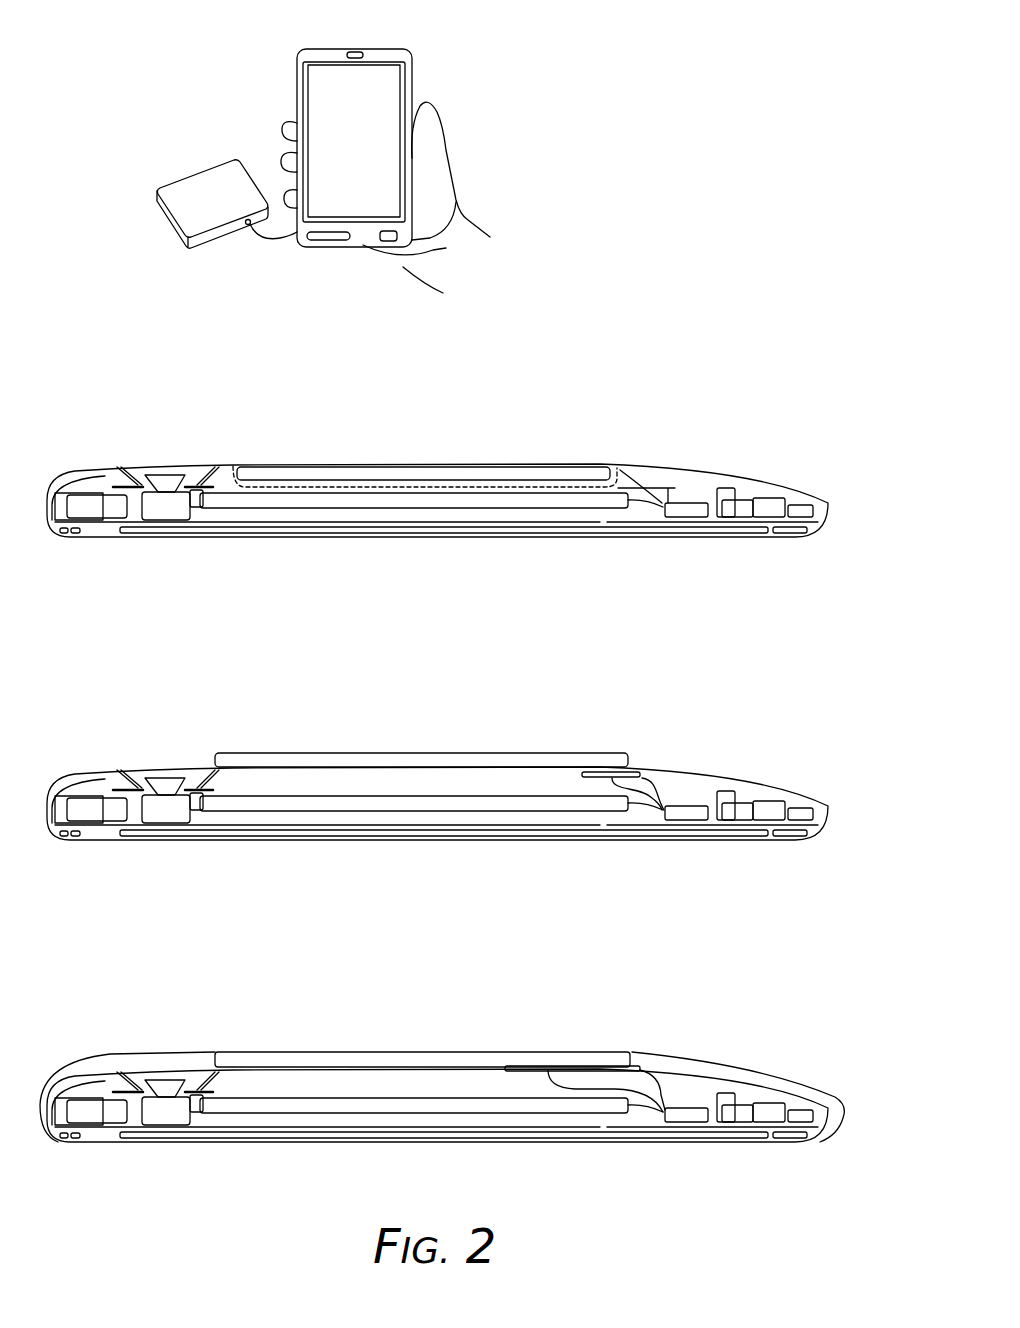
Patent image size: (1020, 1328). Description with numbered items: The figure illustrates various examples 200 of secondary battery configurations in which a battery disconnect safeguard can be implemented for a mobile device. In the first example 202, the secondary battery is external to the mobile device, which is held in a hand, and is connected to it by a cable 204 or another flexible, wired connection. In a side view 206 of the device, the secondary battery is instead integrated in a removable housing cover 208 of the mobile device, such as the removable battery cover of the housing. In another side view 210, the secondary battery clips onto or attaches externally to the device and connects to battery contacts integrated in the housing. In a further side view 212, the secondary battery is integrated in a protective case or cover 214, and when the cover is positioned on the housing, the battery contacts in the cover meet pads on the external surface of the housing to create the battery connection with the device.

The examples of secondary battery configurations 200 is at (588, 65).
The external battery configuration 202 is at (240, 104).
The cable 204 is at (260, 242).
The side view 206 is at (390, 432).
The removable housing cover 208 is at (233, 470).
The side view 210 is at (390, 720).
The side view 212 is at (390, 1022).
The protective case or cover 214 is at (213, 1052).